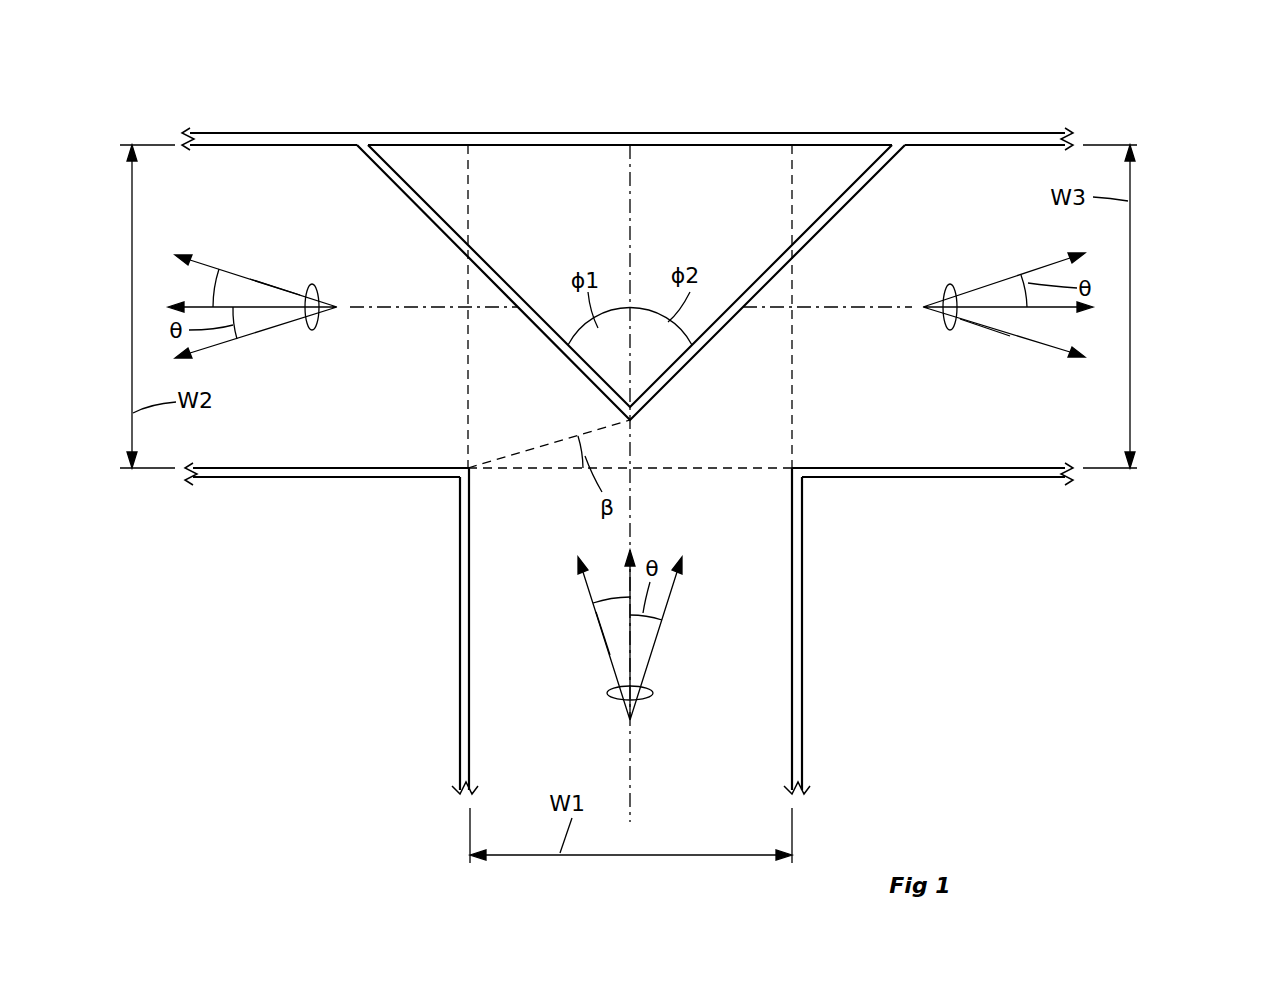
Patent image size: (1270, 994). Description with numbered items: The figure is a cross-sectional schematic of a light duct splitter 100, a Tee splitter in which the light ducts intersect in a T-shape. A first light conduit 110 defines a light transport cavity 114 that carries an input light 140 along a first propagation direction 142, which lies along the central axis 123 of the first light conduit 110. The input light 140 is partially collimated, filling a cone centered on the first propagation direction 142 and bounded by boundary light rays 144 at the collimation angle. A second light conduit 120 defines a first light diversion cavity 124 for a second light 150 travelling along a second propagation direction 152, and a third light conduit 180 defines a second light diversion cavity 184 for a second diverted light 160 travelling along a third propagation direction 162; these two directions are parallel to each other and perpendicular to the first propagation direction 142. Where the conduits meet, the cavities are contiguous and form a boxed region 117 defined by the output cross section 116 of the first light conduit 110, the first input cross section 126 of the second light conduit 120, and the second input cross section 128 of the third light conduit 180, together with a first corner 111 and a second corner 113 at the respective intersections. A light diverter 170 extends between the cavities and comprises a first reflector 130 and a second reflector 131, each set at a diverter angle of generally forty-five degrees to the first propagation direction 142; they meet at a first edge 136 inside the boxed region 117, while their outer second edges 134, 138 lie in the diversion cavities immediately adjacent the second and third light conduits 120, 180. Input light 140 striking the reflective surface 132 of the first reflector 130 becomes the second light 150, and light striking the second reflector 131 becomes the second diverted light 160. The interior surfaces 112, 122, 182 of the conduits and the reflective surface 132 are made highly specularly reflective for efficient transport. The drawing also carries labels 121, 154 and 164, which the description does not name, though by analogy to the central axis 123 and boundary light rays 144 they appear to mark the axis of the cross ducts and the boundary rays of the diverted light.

The light duct splitter 100 is at (1143, 112).
The first light conduit 110 is at (800, 748).
The first corner 111 is at (462, 466).
The interior surface 112 is at (798, 690).
The second corner 113 is at (798, 466).
The light transport cavity 114 is at (773, 612).
The output cross section 116 is at (690, 470).
The boxed region 117 is at (512, 160).
The second light conduit 120 is at (195, 140).
The outlet channel axis 121 is at (842, 303).
The interior surface 122 is at (250, 146).
The central axis 123 is at (642, 752).
The first light diversion cavity 124 is at (308, 162).
The first input cross section 126 is at (465, 388).
The second input cross section 128 is at (795, 408).
The first reflector 130 is at (484, 270).
The second reflector 131 is at (765, 272).
The reflective surface 132 is at (535, 330).
The second edge 134 is at (361, 147).
The first edge 136 is at (636, 423).
The second edge 138 is at (897, 145).
The input light 140 is at (607, 695).
The first propagation direction 142 is at (593, 603).
The boundary light rays 144 is at (600, 648).
The second light 150 is at (318, 286).
The second propagation direction 152 is at (219, 269).
The first outlet flow boundary 154 is at (263, 283).
The second diverted light 160 is at (948, 330).
The third propagation direction 162 is at (1045, 310).
The second outlet flow boundary 164 is at (1000, 333).
The light diverter 170 is at (676, 118).
The third light conduit 180 is at (1056, 140).
The interior surface 182 is at (980, 146).
The second light diversion cavity 184 is at (928, 157).